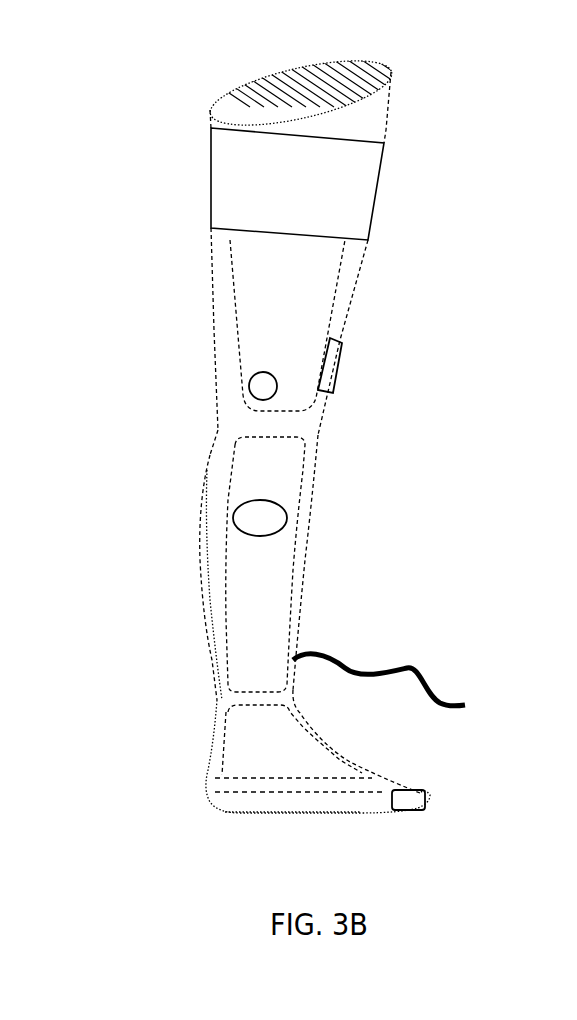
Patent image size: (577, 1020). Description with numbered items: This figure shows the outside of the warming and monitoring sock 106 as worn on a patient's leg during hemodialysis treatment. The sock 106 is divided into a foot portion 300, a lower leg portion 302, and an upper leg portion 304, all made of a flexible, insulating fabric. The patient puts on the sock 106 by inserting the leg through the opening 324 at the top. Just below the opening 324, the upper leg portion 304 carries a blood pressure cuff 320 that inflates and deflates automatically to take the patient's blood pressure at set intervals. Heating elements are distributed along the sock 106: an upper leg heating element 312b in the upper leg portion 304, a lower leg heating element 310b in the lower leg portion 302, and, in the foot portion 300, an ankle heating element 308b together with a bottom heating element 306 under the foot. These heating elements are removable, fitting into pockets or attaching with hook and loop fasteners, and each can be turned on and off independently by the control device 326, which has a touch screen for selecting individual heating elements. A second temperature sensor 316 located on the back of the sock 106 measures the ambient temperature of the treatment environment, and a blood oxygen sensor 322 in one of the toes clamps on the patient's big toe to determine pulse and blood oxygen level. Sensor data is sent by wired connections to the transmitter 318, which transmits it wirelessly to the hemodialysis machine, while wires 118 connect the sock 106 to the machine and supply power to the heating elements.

The sock 106 is at (222, 432).
The wires 118 is at (423, 677).
The foot portion 300 is at (212, 767).
The lower leg portion 302 is at (207, 527).
The upper leg portion 304 is at (222, 250).
The bottom heating element 306 is at (328, 795).
The ankle heating element 308b is at (293, 753).
The lower leg heating element 310b is at (267, 580).
The upper leg heating element 312b is at (298, 313).
The second temperature sensor 316 is at (263, 386).
The transmitter 318 is at (260, 518).
The blood pressure cuff 320 is at (342, 200).
The blood oxygen sensor 322 is at (410, 803).
The opening 324 is at (357, 83).
The control device 326 is at (332, 370).